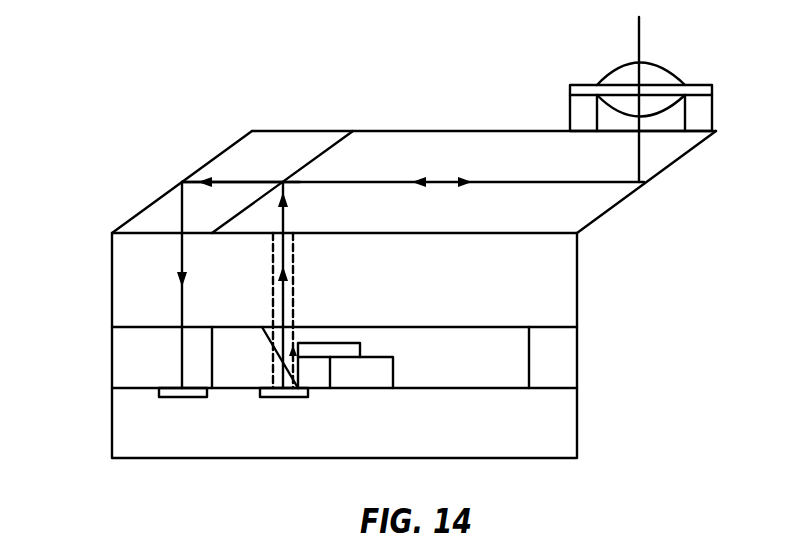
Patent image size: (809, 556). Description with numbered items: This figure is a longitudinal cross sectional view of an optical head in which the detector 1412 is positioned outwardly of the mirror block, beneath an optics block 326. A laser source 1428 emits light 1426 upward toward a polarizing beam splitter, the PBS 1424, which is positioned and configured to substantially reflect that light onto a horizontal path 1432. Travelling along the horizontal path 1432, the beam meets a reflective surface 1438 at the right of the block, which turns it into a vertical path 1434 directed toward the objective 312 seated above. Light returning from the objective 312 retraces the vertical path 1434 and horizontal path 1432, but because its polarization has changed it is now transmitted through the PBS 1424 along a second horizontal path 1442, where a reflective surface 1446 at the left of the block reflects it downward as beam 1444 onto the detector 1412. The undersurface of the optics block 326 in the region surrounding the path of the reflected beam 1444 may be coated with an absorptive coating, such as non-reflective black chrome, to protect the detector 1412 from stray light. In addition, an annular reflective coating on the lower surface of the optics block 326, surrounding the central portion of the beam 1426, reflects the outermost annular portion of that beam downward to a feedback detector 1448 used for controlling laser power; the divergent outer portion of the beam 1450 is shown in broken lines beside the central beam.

The objective 312 is at (645, 75).
The optics block 326 is at (567, 288).
The detector 1412 is at (180, 398).
The PBS 1424 is at (313, 157).
The light 1426 is at (286, 217).
The laser source 1428 is at (362, 343).
The horizontal path 1432 is at (438, 178).
The vertical path 1434 is at (637, 165).
The reflective surface 1438 is at (615, 205).
The horizontal path 1442 is at (240, 182).
The reflected beam 1444 is at (182, 312).
The reflective surface 1446 is at (141, 209).
The feedback detector 1448 is at (284, 398).
The diverging beam 1450 is at (296, 305).